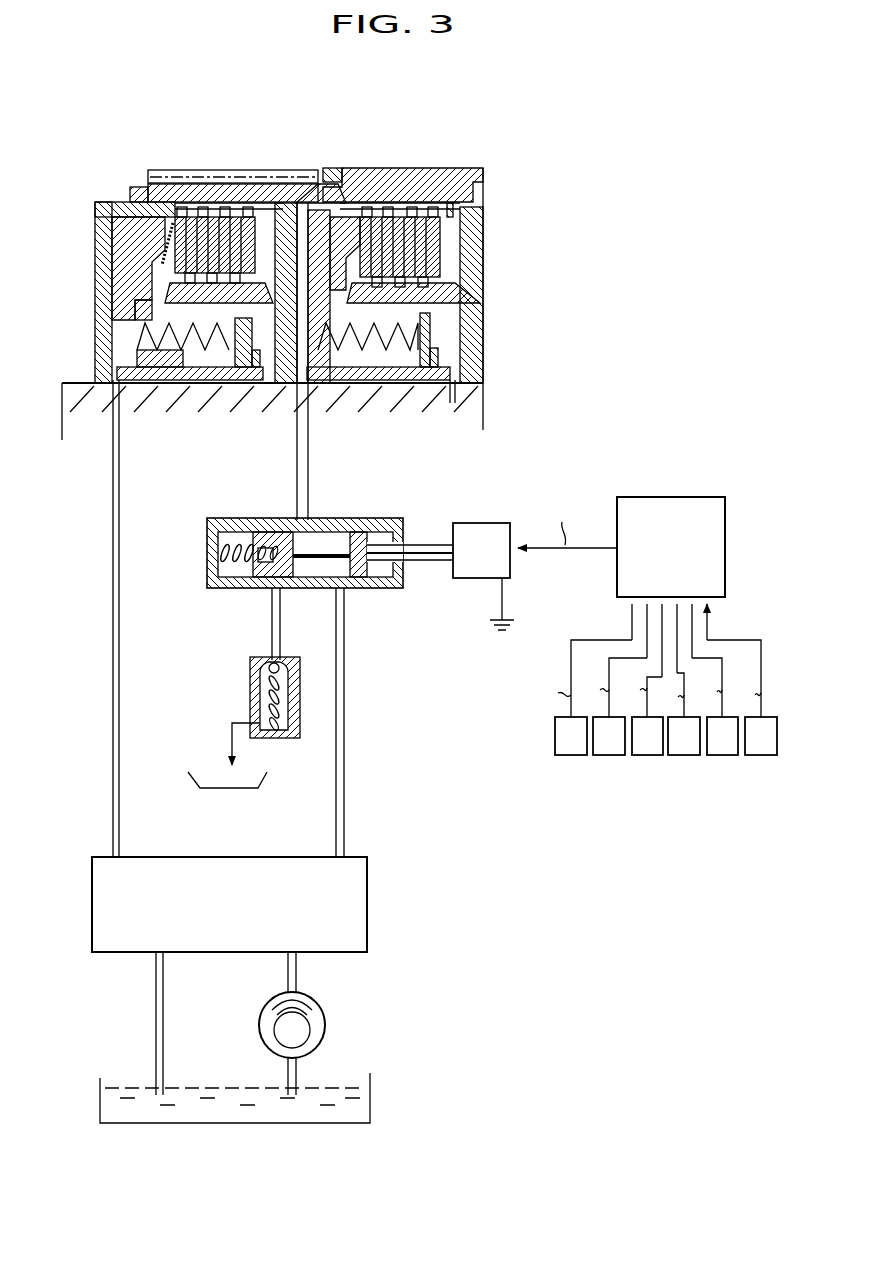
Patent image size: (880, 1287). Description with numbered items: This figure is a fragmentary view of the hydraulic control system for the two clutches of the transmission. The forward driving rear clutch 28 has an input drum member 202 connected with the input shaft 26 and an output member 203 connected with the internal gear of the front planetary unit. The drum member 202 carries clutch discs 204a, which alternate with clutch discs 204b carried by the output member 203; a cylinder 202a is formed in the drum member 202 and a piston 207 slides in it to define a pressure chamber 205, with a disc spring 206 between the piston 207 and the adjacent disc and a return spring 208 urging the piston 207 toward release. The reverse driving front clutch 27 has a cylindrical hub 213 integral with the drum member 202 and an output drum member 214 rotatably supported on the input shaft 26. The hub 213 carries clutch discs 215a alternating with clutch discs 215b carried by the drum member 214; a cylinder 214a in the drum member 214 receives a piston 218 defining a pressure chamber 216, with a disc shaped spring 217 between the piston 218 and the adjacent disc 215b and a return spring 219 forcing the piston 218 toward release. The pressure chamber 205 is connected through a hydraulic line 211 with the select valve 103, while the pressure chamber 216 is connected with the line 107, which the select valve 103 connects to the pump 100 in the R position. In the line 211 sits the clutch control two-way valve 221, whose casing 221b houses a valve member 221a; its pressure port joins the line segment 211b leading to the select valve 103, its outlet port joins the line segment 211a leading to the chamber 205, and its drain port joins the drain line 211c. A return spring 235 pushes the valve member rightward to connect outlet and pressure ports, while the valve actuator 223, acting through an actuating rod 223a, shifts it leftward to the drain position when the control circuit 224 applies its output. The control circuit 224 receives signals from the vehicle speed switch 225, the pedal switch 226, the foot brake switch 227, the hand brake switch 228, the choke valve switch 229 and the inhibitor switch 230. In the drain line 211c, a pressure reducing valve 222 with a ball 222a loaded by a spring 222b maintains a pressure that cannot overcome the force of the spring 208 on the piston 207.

The front clutch 27 is at (112, 178).
The rear clutch 28 is at (475, 238).
The input shaft 26 is at (157, 393).
The cylinder 214a is at (132, 186).
The clutch discs 215b is at (225, 207).
The output drum member 214 is at (240, 184).
The piston 207 is at (290, 203).
The cylinder 202a is at (323, 168).
The disc spring 206 is at (346, 208).
The clutch discs 204a is at (405, 205).
The input drum member 202 is at (445, 186).
The piston 218 is at (130, 272).
The disc shaped spring 217 is at (143, 285).
The pressure chamber 216 is at (117, 326).
The clutch discs 215a is at (222, 300).
The clutch discs 204b is at (403, 285).
The output member 203 is at (458, 310).
The return spring 219 is at (212, 352).
The cylindrical hub 213 is at (253, 300).
The hydraulic line 211 is at (292, 453).
The pressure chamber 205 is at (322, 385).
The return spring 208 is at (418, 383).
The line segment 211a is at (308, 466).
The valve member 221a is at (230, 525).
The clutch control two-way valve 221 is at (350, 512).
The casing 221b is at (393, 528).
The valve actuator 223 is at (478, 522).
The actuating rod 223a is at (426, 562).
The control circuit 224 is at (658, 497).
The line 107 is at (112, 575).
The return spring 235 is at (209, 574).
The pressure reducing valve 222 is at (232, 675).
The ball 222a is at (272, 660).
The spring 222b is at (288, 736).
The drain line 211c is at (281, 623).
The line segment 211b is at (345, 718).
The vehicle speed switch 225 is at (568, 755).
The pedal switch 226 is at (609, 755).
The vehicle foot brake switch 227 is at (647, 755).
The hand brake switch 228 is at (690, 755).
The choke valve switch 229 is at (727, 755).
The inhibitor switch 230 is at (764, 755).
The select valve 103 is at (367, 882).
The pump 100 is at (325, 1030).